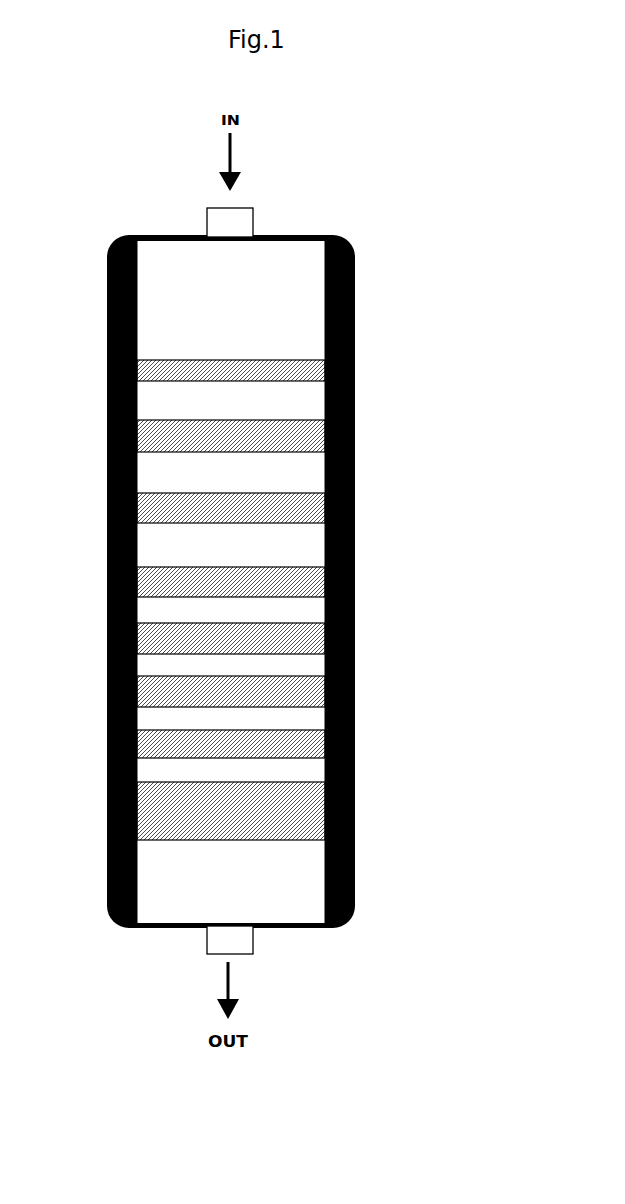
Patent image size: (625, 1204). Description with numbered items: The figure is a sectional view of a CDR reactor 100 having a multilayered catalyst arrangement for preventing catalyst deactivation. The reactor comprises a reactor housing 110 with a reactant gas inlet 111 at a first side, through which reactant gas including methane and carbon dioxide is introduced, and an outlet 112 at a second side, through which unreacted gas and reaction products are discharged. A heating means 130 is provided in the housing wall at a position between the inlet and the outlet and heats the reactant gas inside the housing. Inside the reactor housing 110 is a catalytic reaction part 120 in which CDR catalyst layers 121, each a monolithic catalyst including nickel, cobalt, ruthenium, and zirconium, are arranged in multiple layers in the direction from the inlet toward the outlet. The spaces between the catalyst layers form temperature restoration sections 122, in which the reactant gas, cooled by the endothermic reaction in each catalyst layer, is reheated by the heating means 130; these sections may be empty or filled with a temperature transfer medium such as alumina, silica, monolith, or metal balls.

The CDR reactor 100 is at (257, 580).
The reactor housing 110 is at (103, 388).
The reactant gas inlet 111 is at (243, 214).
The outlet 112 is at (242, 939).
The catalytic reaction part 120 is at (299, 574).
The CDR catalyst layers 121 is at (292, 368).
The temperature restoration sections 122 is at (295, 405).
The heating means 130 is at (356, 282).